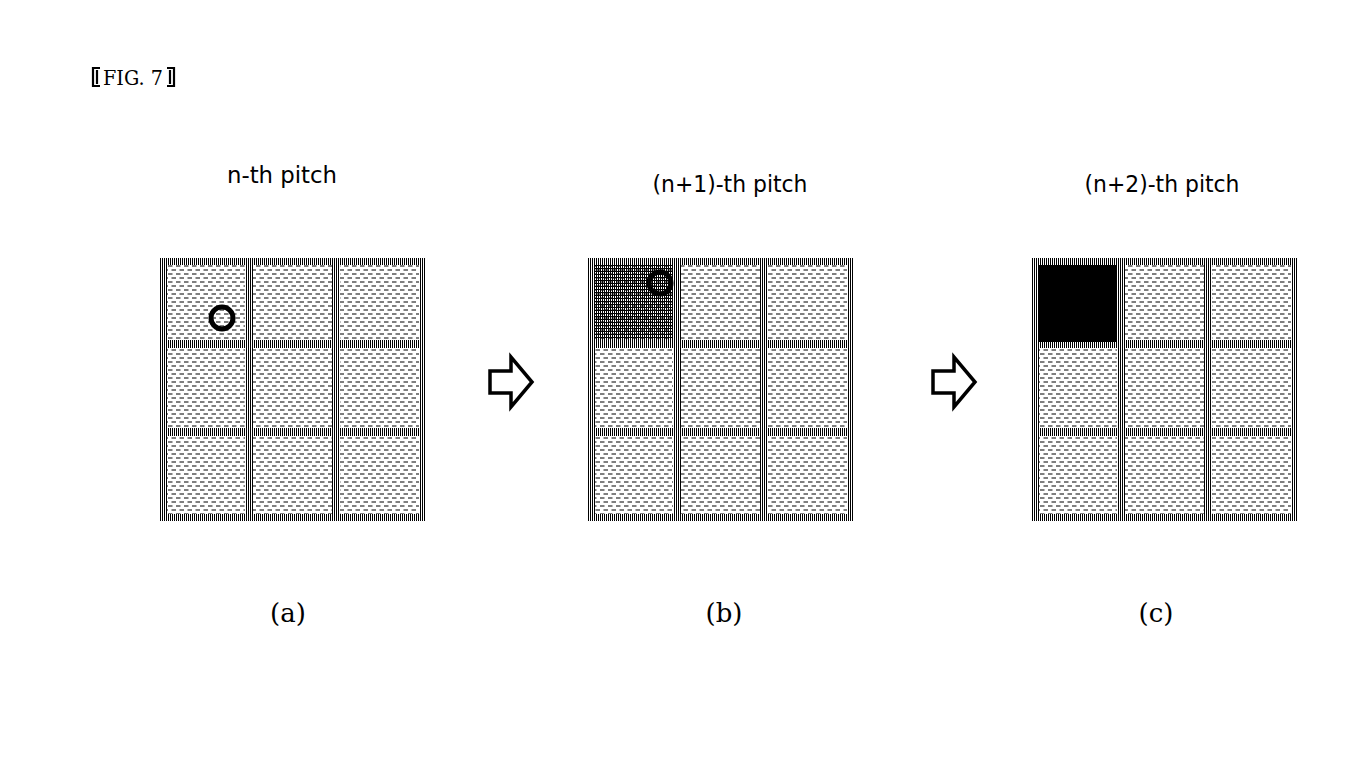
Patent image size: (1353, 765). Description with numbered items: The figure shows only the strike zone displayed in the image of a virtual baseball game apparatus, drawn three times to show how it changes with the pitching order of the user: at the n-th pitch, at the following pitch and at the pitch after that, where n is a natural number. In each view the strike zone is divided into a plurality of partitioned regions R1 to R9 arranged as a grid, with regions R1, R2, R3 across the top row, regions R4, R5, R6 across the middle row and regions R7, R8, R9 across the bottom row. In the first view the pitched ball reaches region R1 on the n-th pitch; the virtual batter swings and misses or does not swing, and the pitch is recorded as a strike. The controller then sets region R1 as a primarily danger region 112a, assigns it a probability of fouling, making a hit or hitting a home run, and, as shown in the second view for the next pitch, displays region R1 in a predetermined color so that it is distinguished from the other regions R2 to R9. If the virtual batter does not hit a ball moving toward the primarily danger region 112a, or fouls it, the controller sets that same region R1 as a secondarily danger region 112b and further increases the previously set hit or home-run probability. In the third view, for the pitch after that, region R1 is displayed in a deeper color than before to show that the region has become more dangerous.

The region R1 is at (208, 258).
The region R2 is at (289, 258).
The region R3 is at (379, 258).
The region R4 is at (162, 398).
The region R5 is at (255, 358).
The region R6 is at (428, 418).
The region R7 is at (207, 521).
The region R8 is at (294, 521).
The region R9 is at (384, 521).
The primarily danger region 112a is at (612, 292).
The secondarily danger region 112b is at (1040, 287).